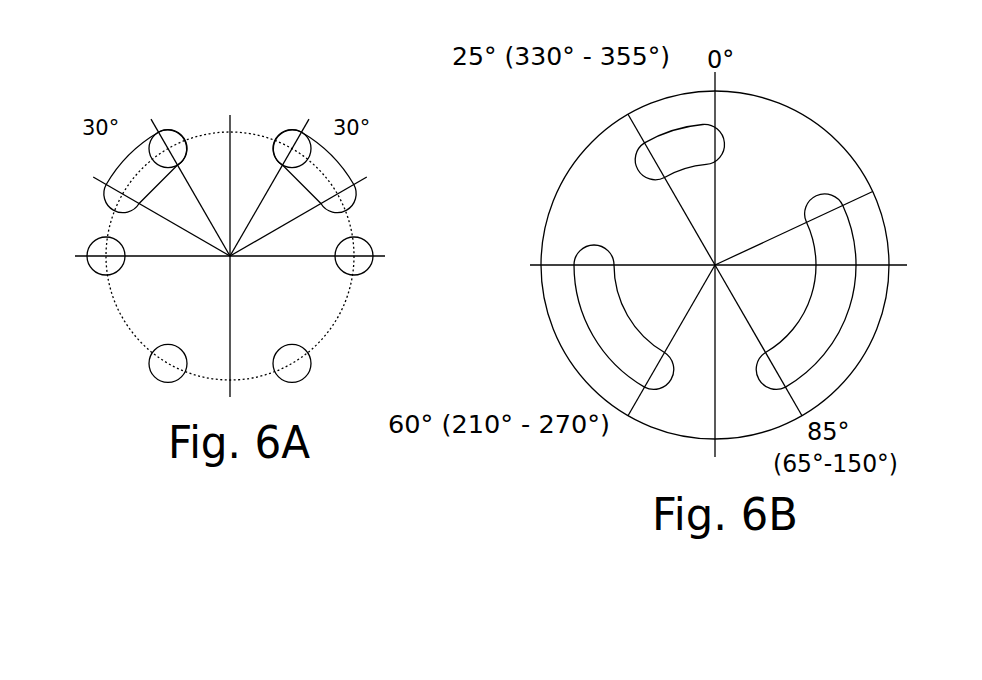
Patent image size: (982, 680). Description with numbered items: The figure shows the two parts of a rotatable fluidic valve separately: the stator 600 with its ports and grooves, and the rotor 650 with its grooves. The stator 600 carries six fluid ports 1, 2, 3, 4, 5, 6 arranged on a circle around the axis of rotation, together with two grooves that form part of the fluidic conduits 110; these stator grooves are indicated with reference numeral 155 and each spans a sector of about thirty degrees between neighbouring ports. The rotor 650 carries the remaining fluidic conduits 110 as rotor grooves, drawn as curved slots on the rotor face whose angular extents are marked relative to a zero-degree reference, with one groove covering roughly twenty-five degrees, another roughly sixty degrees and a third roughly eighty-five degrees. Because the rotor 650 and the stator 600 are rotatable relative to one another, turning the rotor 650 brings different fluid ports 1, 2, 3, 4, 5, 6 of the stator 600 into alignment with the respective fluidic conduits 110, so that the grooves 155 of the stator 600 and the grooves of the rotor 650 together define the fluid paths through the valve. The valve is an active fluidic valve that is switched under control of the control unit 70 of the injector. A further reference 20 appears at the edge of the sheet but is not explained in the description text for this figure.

In FIG. 6A, the stator 600 is at (296, 72).
In FIG. 6B, the rotor 650 is at (804, 74).
In FIG. 6A, the stator grooves 155 is at (130, 176).
In FIG. 6B, the fluidic conduits 110 is at (594, 258).
In FIG. 6A, the fluid port 1 is at (290, 140).
In FIG. 6A, the fluid port 2 is at (172, 140).
In FIG. 6A, the fluid port 3 is at (116, 262).
In FIG. 6A, the fluid port 4 is at (172, 352).
In FIG. 6A, the fluid port 5 is at (287, 352).
In FIG. 6A, the fluid port 6 is at (345, 262).
In FIG. 6B, the control unit 70 is at (650, 679).
In FIG. 6B, the component 20 is at (840, 679).